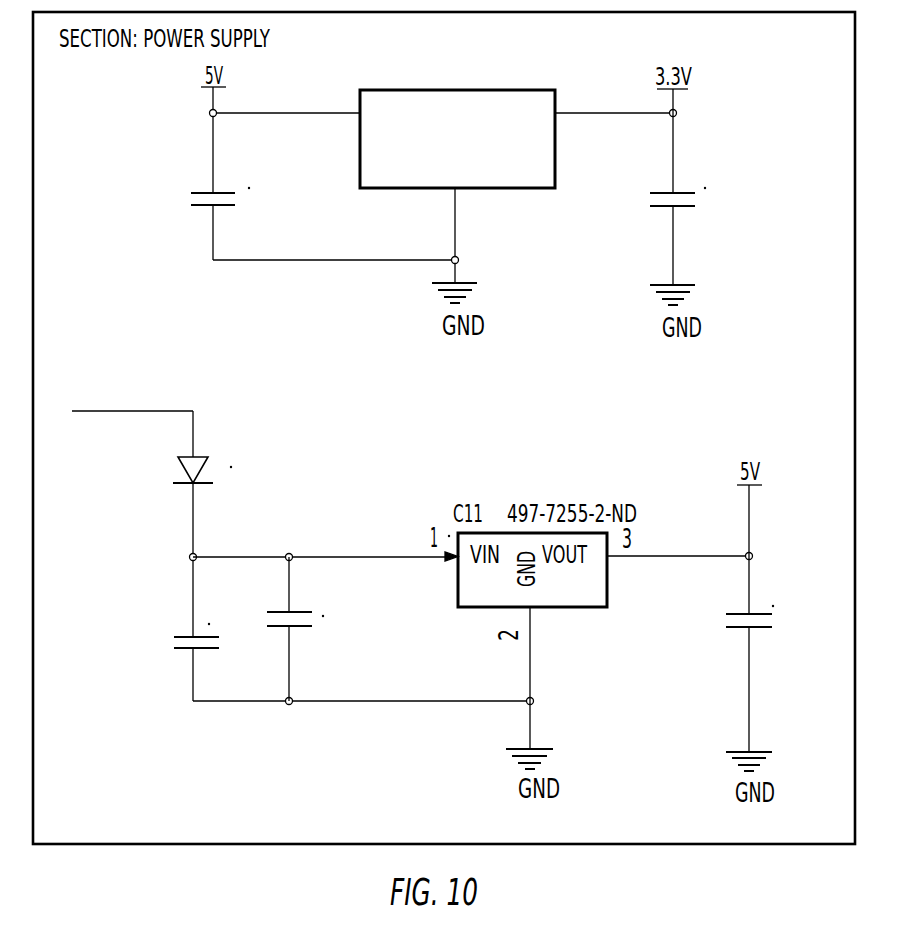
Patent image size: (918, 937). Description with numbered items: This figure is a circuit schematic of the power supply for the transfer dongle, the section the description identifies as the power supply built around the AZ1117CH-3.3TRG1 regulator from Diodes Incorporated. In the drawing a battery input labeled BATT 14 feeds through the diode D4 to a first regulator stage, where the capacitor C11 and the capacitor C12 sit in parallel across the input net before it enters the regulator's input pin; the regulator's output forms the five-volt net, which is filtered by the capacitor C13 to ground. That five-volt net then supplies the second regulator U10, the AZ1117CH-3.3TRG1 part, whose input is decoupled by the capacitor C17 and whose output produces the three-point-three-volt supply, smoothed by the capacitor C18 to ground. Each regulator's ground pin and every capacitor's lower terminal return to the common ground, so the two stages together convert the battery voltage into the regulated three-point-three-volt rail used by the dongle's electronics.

The battery 14 is at (129, 420).
The voltage regulator AZ1117CH-3.3TRG1 U10 is at (469, 172).
The 10 microfarad capacitor C17 is at (246, 209).
The 22 microfarad capacitor C18 is at (699, 221).
The diode D4 is at (216, 496).
The 4.7 microfarad capacitor C11 is at (217, 647).
The 10 microfarad capacitor C12 is at (320, 629).
The 4.7 microfarad capacitor C13 is at (769, 664).